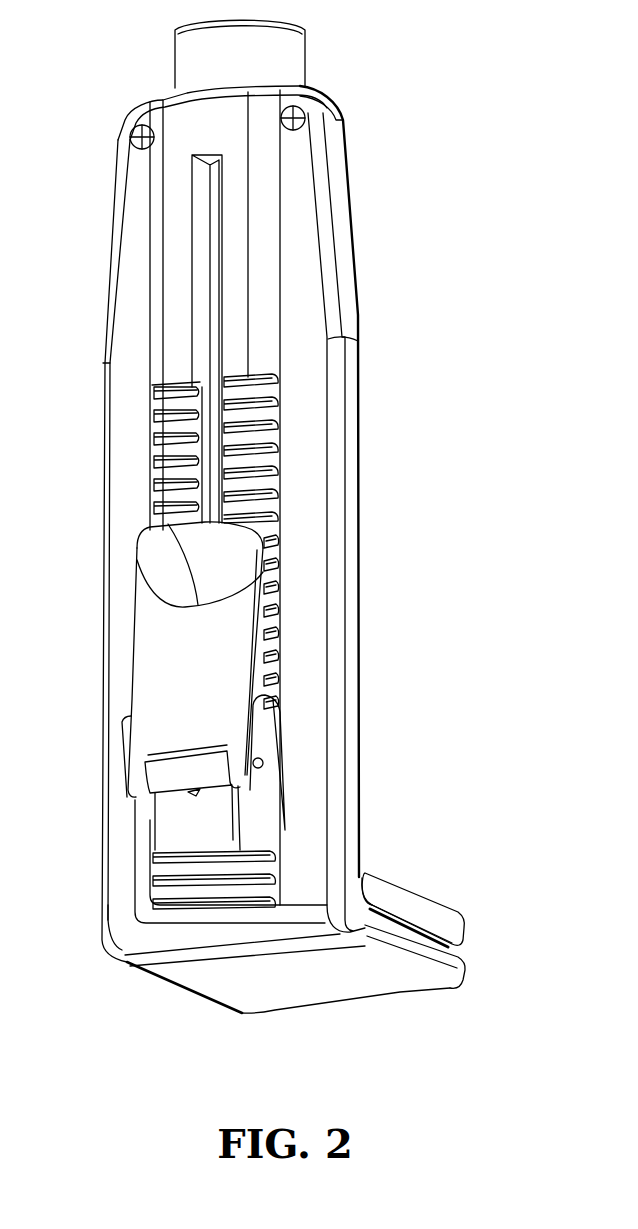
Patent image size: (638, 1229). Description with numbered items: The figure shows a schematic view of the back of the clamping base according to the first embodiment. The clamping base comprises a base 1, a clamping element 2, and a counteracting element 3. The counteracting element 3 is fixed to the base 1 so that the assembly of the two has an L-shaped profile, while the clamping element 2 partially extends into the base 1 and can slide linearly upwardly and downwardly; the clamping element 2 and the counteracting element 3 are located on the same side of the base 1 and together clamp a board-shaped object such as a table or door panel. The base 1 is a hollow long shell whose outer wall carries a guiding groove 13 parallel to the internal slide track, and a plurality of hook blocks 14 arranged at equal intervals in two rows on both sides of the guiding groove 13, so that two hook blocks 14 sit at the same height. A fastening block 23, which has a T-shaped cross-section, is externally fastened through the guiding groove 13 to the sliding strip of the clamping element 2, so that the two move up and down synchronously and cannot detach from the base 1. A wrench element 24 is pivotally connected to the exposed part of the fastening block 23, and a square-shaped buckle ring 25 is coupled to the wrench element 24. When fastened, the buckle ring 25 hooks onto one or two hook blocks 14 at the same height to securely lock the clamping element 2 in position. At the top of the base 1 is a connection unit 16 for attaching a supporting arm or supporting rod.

The base 1 is at (332, 295).
The clamping element 2 is at (428, 892).
The counteracting element 3 is at (435, 993).
The guiding groove 13 is at (212, 265).
The hook blocks 14 is at (262, 407).
The connection unit 16 is at (282, 47).
The fastening block 23 is at (180, 820).
The wrench element 24 is at (158, 667).
The buckle ring 25 is at (166, 914).